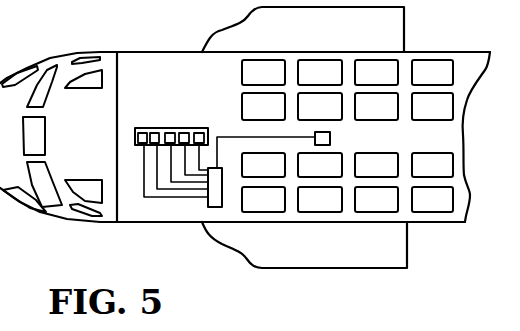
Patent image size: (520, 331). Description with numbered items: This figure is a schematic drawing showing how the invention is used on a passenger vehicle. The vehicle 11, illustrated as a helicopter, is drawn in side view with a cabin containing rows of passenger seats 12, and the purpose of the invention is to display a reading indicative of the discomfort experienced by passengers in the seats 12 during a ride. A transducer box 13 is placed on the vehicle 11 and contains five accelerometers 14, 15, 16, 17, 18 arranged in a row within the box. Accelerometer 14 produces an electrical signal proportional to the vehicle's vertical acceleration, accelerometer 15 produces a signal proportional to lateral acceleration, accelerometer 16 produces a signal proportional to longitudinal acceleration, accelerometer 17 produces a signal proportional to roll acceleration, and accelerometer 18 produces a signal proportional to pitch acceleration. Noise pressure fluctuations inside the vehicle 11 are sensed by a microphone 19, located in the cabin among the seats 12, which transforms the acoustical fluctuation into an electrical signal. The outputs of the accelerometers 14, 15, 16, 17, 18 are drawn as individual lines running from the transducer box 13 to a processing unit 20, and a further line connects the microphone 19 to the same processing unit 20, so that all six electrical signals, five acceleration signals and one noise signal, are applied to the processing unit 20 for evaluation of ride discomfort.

The vehicle 11 is at (153, 52).
The passenger seats 12 is at (435, 63).
The transducer box 13 is at (138, 147).
The accelerometer 14 is at (142, 132).
The accelerometer 15 is at (153, 132).
The accelerometer 16 is at (172, 132).
The accelerometer 17 is at (185, 132).
The accelerometer 18 is at (200, 132).
The microphone 19 is at (330, 138).
The processing unit 20 is at (208, 204).